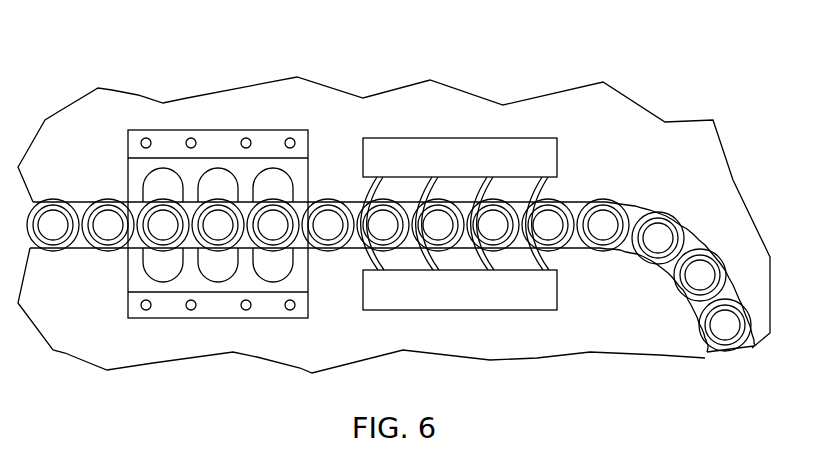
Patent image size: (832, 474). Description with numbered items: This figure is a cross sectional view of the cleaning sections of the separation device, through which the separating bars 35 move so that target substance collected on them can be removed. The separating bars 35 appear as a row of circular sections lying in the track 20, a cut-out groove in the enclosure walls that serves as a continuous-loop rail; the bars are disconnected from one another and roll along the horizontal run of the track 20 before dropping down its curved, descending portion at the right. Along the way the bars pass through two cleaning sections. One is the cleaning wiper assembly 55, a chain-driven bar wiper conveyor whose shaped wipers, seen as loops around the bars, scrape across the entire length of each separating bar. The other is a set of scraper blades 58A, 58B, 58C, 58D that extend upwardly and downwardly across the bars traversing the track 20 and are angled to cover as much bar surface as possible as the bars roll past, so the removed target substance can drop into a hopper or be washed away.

The track 20 is at (407, 300).
The separating bars 35 is at (660, 240).
The cleaning wiper assembly 55 is at (163, 274).
The scraper blade 58A is at (376, 195).
The scraper blade 58B is at (431, 185).
The scraper blade 58C is at (484, 185).
The scraper blade 58D is at (553, 192).